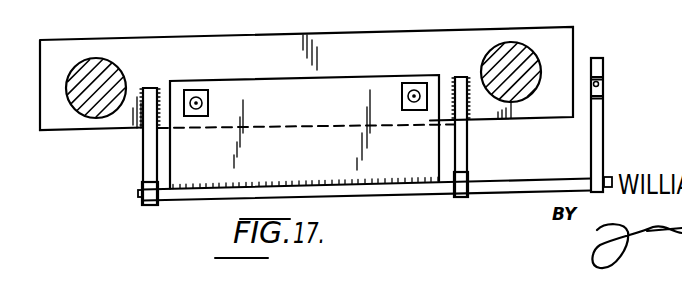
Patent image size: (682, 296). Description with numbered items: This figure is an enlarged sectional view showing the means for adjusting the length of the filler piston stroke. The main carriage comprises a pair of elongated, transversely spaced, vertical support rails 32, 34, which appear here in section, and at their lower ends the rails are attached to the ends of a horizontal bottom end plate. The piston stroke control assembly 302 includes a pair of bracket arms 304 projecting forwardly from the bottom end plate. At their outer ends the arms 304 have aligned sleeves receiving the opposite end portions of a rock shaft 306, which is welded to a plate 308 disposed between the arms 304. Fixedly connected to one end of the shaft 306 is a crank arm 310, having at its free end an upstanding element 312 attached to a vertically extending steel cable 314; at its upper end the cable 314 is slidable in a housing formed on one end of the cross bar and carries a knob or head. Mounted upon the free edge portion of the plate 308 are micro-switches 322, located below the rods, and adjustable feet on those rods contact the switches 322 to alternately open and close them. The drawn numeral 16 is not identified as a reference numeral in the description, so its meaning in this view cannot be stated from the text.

The mounting plate 16 is at (156, 47).
The vertical support rail 32 is at (88, 66).
The vertical support rail 34 is at (525, 73).
The piston stroke control assembly 302 is at (344, 73).
The bracket arm 304 is at (148, 147).
The rock shaft 306 is at (140, 195).
The plate 308 is at (419, 171).
The crank arm 310 is at (598, 134).
The upstanding element 312 is at (603, 72).
The steel cable 314 is at (601, 84).
The micro-switch 322 is at (197, 100).